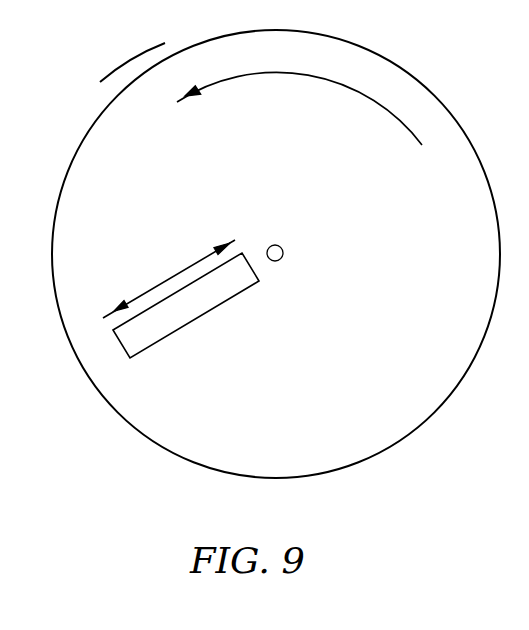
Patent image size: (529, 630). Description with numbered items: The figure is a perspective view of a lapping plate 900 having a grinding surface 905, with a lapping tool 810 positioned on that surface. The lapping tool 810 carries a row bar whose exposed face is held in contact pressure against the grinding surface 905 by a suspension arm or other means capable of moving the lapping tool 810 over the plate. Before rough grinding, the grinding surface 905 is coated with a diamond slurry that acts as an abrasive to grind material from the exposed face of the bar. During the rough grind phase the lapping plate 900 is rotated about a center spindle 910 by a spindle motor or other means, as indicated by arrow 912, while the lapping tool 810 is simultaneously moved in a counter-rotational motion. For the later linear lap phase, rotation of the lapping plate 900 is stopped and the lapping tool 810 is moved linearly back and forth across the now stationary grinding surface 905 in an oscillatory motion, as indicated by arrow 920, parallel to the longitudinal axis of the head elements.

The lapping plate 900 is at (362, 43).
The grinding surface 905 is at (137, 98).
The arrow 912 is at (278, 72).
The center spindle 910 is at (284, 246).
The lapping tool 810 is at (195, 320).
The arrow 920 is at (173, 276).